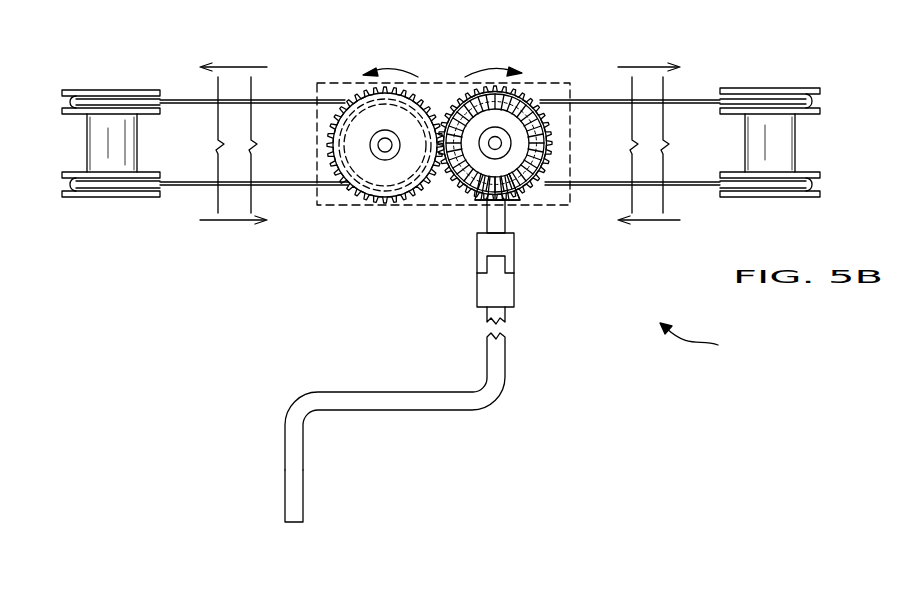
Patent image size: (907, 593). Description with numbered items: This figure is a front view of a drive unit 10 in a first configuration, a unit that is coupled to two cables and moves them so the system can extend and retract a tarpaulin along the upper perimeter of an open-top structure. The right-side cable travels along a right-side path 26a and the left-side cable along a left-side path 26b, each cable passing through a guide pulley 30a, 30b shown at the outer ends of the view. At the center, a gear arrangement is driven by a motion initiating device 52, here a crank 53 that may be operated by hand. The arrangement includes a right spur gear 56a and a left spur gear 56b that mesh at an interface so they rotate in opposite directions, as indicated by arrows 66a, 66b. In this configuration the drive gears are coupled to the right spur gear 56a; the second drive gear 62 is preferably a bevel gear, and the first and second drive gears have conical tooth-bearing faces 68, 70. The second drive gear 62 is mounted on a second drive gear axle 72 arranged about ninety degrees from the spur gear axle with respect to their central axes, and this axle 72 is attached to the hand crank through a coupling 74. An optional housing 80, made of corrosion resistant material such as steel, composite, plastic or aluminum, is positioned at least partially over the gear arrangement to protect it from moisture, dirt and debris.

The drive unit 10 is at (702, 341).
The right-side path 26a is at (658, 223).
The left-side path 26b is at (223, 227).
The guide pulley 30a is at (808, 197).
The guide pulley 30b is at (72, 197).
The motion initiating device 52 is at (285, 490).
The crank 53 is at (285, 448).
The right spur gear 56a is at (455, 183).
The left spur gear 56b is at (365, 195).
The second drive gear 62 is at (519, 200).
The arrow 66a is at (490, 70).
The arrow 66b is at (397, 72).
The tooth-bearing face 68 is at (542, 178).
The tooth-bearing face 70 is at (475, 198).
The second drive gear axle 72 is at (486, 222).
The coupling 74 is at (516, 288).
The housing 80 is at (317, 205).